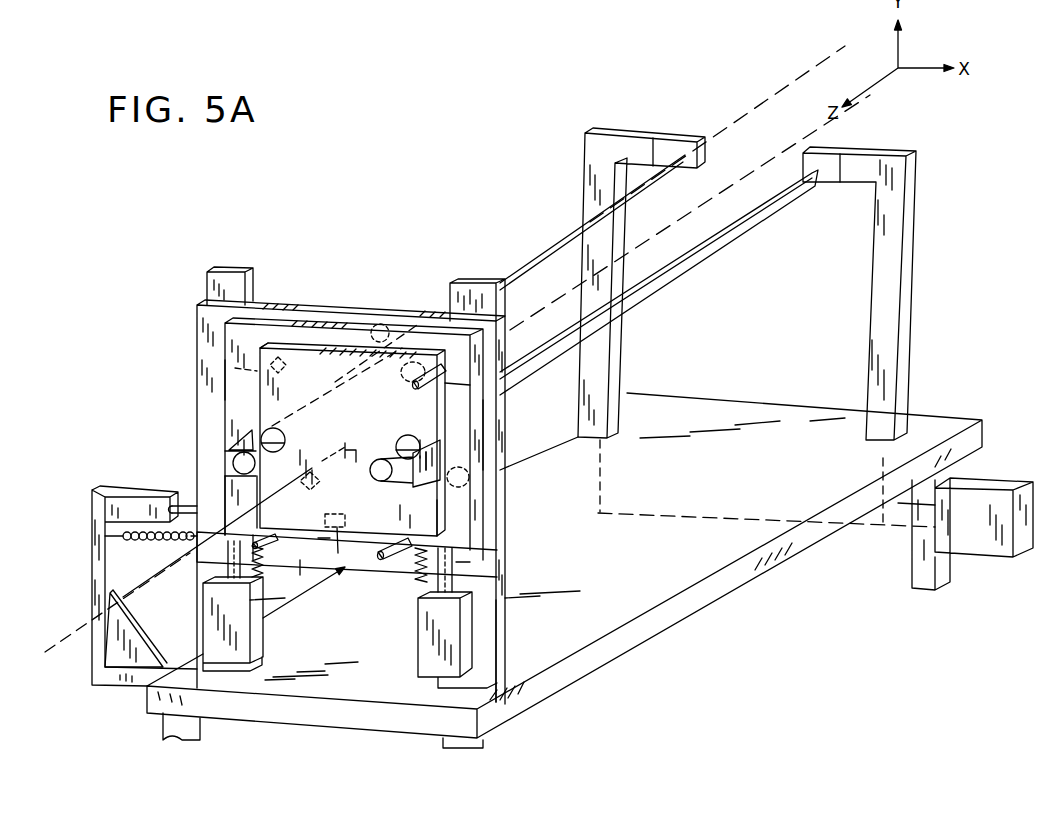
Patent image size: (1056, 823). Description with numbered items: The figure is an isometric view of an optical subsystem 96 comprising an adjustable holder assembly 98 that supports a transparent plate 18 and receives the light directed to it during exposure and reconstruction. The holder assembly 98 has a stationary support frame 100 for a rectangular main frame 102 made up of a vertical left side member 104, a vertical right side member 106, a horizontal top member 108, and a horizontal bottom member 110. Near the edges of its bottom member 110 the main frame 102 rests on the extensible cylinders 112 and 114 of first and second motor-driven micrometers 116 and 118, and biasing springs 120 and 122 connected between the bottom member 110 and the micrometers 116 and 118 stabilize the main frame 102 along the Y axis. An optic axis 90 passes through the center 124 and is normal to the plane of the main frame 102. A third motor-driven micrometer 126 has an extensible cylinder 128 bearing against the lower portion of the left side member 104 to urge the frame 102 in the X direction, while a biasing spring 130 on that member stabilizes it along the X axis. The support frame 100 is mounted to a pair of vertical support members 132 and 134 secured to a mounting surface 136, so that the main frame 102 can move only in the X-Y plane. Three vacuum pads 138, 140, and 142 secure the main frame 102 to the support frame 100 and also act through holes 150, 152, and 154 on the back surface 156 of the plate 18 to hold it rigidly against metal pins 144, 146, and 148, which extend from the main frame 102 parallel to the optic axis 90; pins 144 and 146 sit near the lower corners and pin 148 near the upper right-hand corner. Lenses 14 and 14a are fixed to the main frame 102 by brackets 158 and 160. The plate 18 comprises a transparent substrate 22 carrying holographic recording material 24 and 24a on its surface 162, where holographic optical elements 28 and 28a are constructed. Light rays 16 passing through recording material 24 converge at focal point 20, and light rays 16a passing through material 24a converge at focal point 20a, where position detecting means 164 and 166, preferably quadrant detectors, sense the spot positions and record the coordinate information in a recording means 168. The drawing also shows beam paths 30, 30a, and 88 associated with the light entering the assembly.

The stationary support frame 100 is at (195, 302).
The main frame 102 is at (222, 378).
The vertical left side member 104 is at (232, 347).
The vertical right side member 106 is at (466, 446).
The horizontal top member 108 is at (330, 348).
The horizontal bottom member 110 is at (318, 565).
The extensible cylinder 112 is at (215, 552).
The extensible cylinder 114 is at (456, 562).
The first motor-driven micrometer 116 is at (244, 640).
The second motor-driven micrometer 118 is at (425, 654).
The biasing spring 120 is at (262, 567).
The biasing spring 122 is at (416, 576).
The center 124 is at (352, 460).
The third motor-driven micrometer 126 is at (128, 497).
The extensible cylinder 128 is at (178, 505).
The biasing spring 130 is at (150, 540).
The vertical support member 132 is at (228, 272).
The vertical support member 134 is at (470, 283).
The mounting surface 136 is at (530, 696).
The vacuum pad 138 is at (299, 492).
The vacuum pad 140 is at (470, 478).
The vacuum pad 142 is at (380, 322).
The metal pin 144 is at (318, 538).
The metal pin 146 is at (390, 554).
The metal pin 148 is at (412, 355).
The hole 150 is at (325, 545).
The hole 152 is at (412, 362).
The hole 154 is at (235, 368).
The back surface 156 is at (305, 348).
The bracket 158 is at (235, 463).
The bracket 160 is at (447, 384).
The surface 162 is at (336, 506).
The position detecting means 164 is at (828, 158).
The position detecting means 166 is at (660, 147).
The recording means 168 is at (992, 497).
The convex-plano lens 14 is at (377, 482).
The lens 14a is at (228, 452).
The refracted light rays 16 is at (643, 285).
The light rays 16a is at (553, 252).
The transparent plate 18 is at (270, 347).
The focal point 20 is at (822, 175).
The focal point 20a is at (678, 157).
The transparent substrate 22 is at (432, 516).
The holographic recording material 24 is at (396, 444).
The holographic recording material 24a is at (270, 452).
The holographic optical element 28 is at (401, 433).
The holographic optical element 28a is at (258, 428).
The laser beam 30 is at (880, 127).
The laser beam 30a is at (750, 100).
The beam path 88 is at (330, 447).
The optic axis 90 is at (70, 636).
The optical subsystem 96 is at (708, 556).
The adjustable holder assembly 98 is at (510, 620).